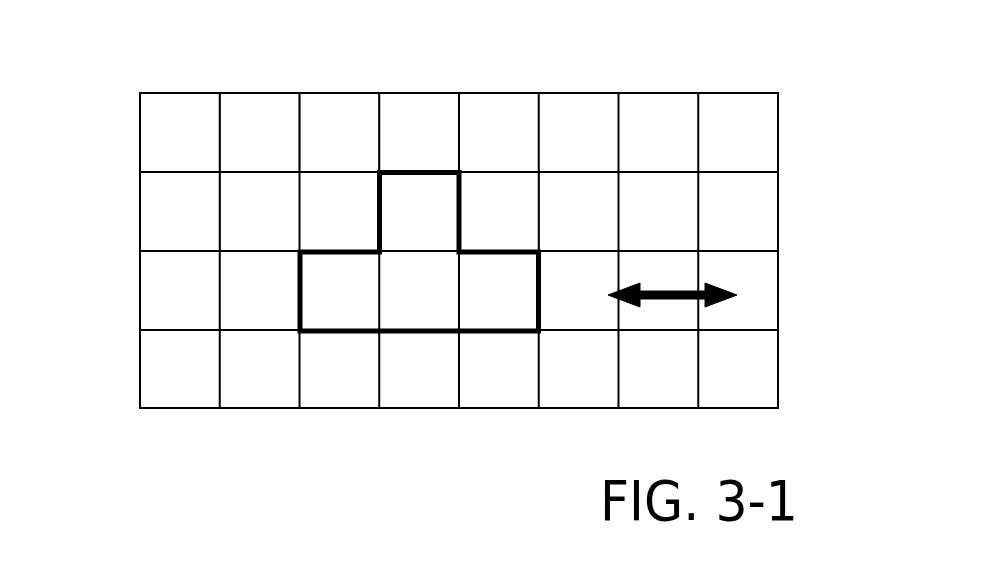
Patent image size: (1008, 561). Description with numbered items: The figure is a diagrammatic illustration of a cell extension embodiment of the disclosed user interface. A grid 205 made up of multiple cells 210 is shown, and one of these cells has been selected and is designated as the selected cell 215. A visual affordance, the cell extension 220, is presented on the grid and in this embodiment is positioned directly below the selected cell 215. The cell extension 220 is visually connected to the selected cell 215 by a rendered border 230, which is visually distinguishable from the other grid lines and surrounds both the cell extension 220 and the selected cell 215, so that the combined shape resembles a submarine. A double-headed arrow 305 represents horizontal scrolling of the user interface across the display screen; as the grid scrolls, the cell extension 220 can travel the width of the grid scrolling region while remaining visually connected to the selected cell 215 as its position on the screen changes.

The grid 205 is at (778, 131).
The cells 210 is at (160, 192).
The selected cell 215 is at (408, 202).
The cell extension 220 is at (330, 290).
The border 230 is at (463, 192).
The arrow 305 is at (737, 296).